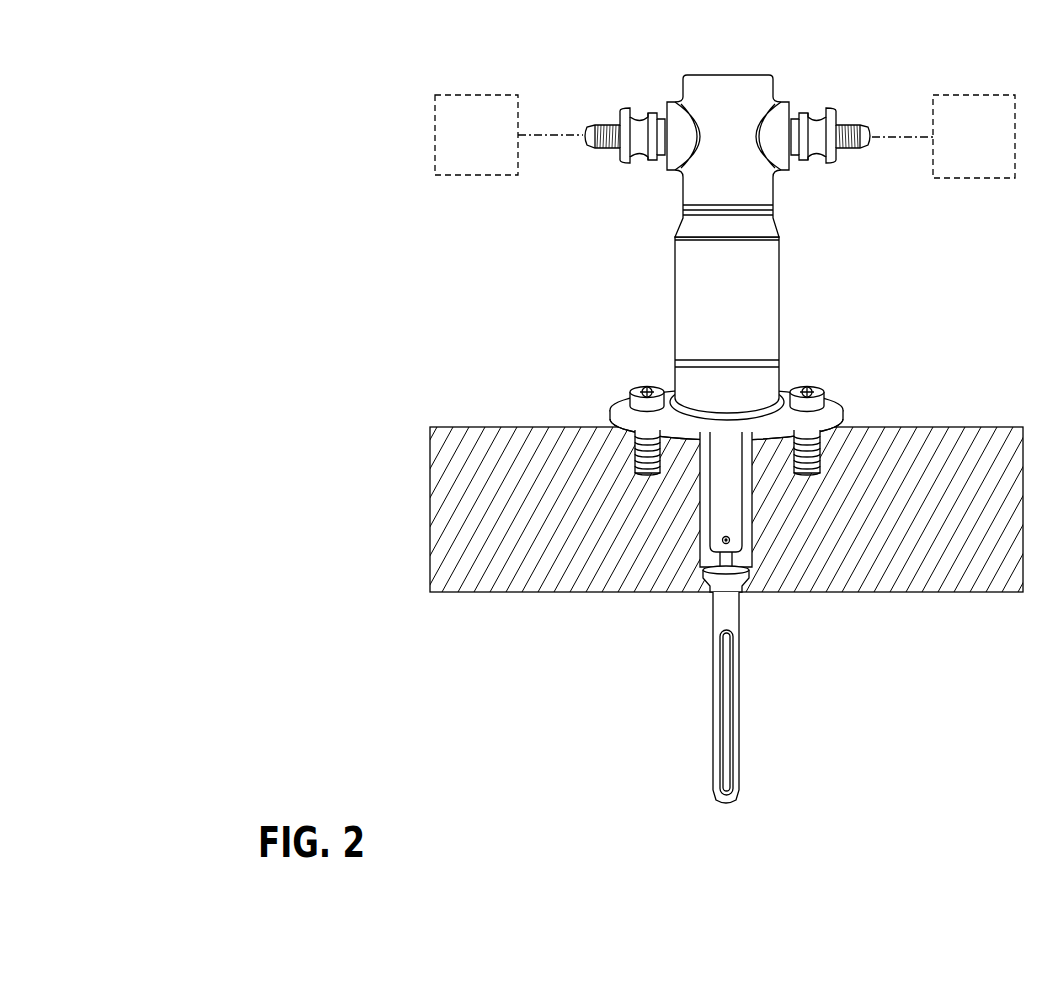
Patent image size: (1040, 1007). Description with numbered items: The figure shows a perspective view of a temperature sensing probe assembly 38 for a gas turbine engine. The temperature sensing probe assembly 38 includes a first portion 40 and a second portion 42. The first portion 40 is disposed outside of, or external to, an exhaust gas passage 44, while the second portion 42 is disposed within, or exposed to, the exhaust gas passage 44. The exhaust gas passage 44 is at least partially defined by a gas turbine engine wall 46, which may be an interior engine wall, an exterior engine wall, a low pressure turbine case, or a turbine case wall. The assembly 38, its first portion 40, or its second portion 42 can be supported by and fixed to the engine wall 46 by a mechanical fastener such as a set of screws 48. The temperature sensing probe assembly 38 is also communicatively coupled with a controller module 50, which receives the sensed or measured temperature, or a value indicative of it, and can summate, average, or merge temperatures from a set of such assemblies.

The temperature sensing probe assembly 38 is at (611, 55).
The first portion 40 is at (763, 298).
The second portion 42 is at (753, 612).
The exhaust gas passage 44 is at (545, 630).
The gas turbine engine wall 46 is at (503, 440).
The set of screws 48 is at (637, 388).
The controller module 50 is at (468, 122).